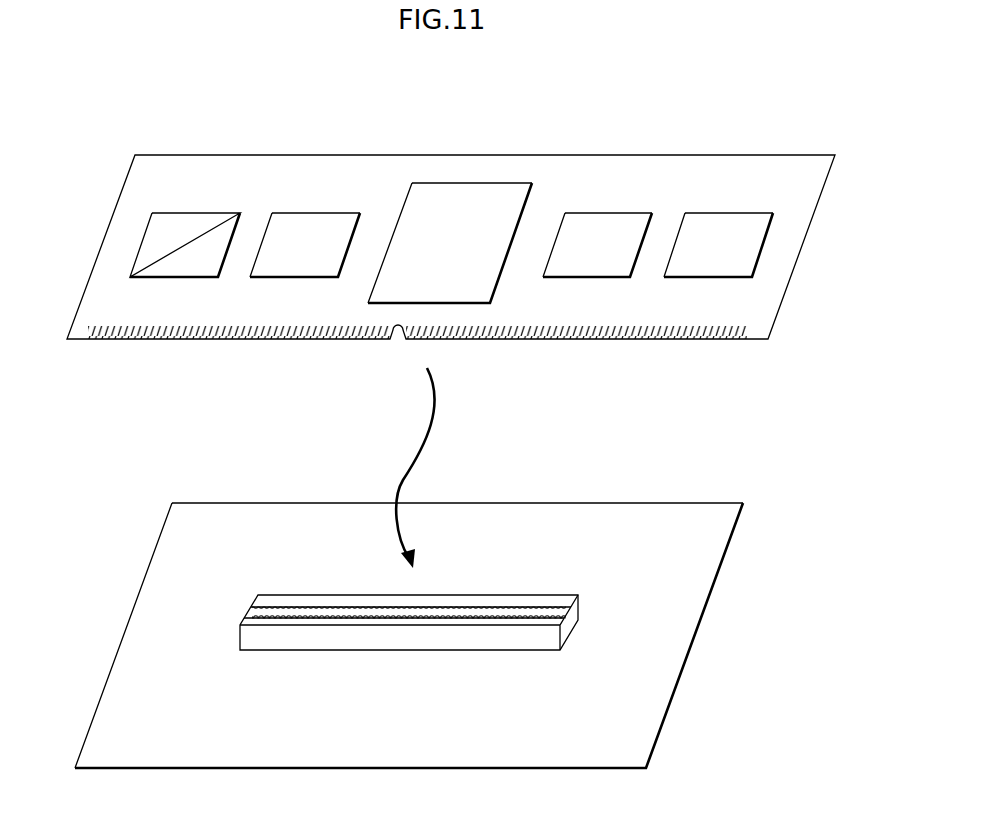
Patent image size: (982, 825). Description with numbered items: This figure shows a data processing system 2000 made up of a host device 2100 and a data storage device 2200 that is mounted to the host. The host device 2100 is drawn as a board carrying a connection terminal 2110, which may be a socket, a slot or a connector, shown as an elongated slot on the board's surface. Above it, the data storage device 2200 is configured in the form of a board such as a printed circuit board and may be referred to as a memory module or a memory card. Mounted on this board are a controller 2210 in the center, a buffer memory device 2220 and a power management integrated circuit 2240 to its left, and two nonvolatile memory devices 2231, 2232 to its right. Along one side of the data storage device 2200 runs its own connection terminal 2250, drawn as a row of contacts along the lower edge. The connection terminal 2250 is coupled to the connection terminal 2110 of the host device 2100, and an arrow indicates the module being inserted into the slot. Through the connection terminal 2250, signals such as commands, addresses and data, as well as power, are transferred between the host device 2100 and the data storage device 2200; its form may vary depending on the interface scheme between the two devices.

The data processing system 2000 is at (107, 115).
The host device 2100 is at (409, 635).
The connection terminal 2110 is at (578, 598).
The data storage device 2200 is at (451, 247).
The controller 2210 is at (450, 243).
The buffer memory device 2220 is at (305, 245).
The nonvolatile memory device 2231 is at (597, 245).
The nonvolatile memory device 2232 is at (718, 245).
The power management integrated circuit 2240 is at (185, 245).
The connection terminal 2250 is at (118, 340).